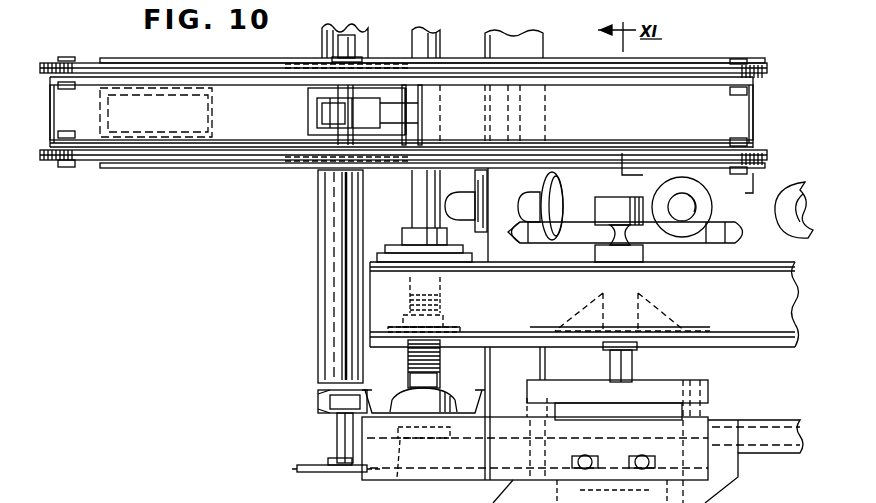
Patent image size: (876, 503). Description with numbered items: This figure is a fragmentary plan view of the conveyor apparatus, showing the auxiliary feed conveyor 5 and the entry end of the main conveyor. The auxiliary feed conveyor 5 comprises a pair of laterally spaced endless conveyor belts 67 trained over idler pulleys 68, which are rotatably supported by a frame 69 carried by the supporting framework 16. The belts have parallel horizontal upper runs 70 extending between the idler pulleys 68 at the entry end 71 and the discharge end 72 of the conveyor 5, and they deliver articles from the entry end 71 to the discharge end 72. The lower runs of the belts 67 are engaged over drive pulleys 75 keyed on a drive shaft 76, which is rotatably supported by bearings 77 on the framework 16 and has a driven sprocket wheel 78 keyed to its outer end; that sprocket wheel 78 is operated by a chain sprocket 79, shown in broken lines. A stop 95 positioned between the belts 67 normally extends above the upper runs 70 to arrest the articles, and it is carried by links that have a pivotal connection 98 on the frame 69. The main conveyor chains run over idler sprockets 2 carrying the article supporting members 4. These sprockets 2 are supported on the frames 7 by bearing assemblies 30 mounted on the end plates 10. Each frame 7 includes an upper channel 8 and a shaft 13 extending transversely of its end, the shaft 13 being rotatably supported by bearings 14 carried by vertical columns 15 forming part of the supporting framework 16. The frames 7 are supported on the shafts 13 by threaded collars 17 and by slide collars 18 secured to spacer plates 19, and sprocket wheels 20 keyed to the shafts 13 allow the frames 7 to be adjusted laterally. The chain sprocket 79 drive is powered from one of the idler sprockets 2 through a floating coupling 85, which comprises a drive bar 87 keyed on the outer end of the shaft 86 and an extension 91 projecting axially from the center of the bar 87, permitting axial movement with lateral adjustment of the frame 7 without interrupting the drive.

The idler sprockets 2 is at (740, 236).
The article supporting members 4 is at (706, 210).
The auxiliary feed conveyor 5 is at (181, 175).
The frames 7 is at (770, 352).
The upper channel 8 is at (761, 305).
The end plate 10 is at (720, 345).
The shafts 13 is at (412, 199).
The bearings 14 is at (437, 395).
The vertical columns 15 is at (380, 410).
The supporting framework 16 is at (784, 455).
The threaded collars 17 is at (452, 316).
The slide collars 18 is at (410, 236).
The spacer plates 19 is at (464, 258).
The sprocket wheels 20 is at (402, 470).
The bearing assemblies 30 is at (643, 284).
The endless conveyor belts 67 is at (250, 68).
The idler pulleys 68 is at (45, 58).
The frame 69 is at (604, 121).
The upper runs 70 is at (160, 54).
The entry end 71 is at (52, 102).
The discharge end 72 is at (740, 118).
The drive pulleys 75 is at (298, 60).
The drive shaft 76 is at (338, 434).
The bearings 77 is at (320, 397).
The driven sprocket wheel 78 is at (310, 476).
The chain sprocket 79 is at (447, 470).
The floating coupling 85 is at (720, 403).
The shaft 86 is at (635, 370).
The drive bar 87 is at (582, 392).
The extension 91 is at (612, 438).
The stop 95 is at (320, 115).
The pivotal connection 98 is at (420, 125).